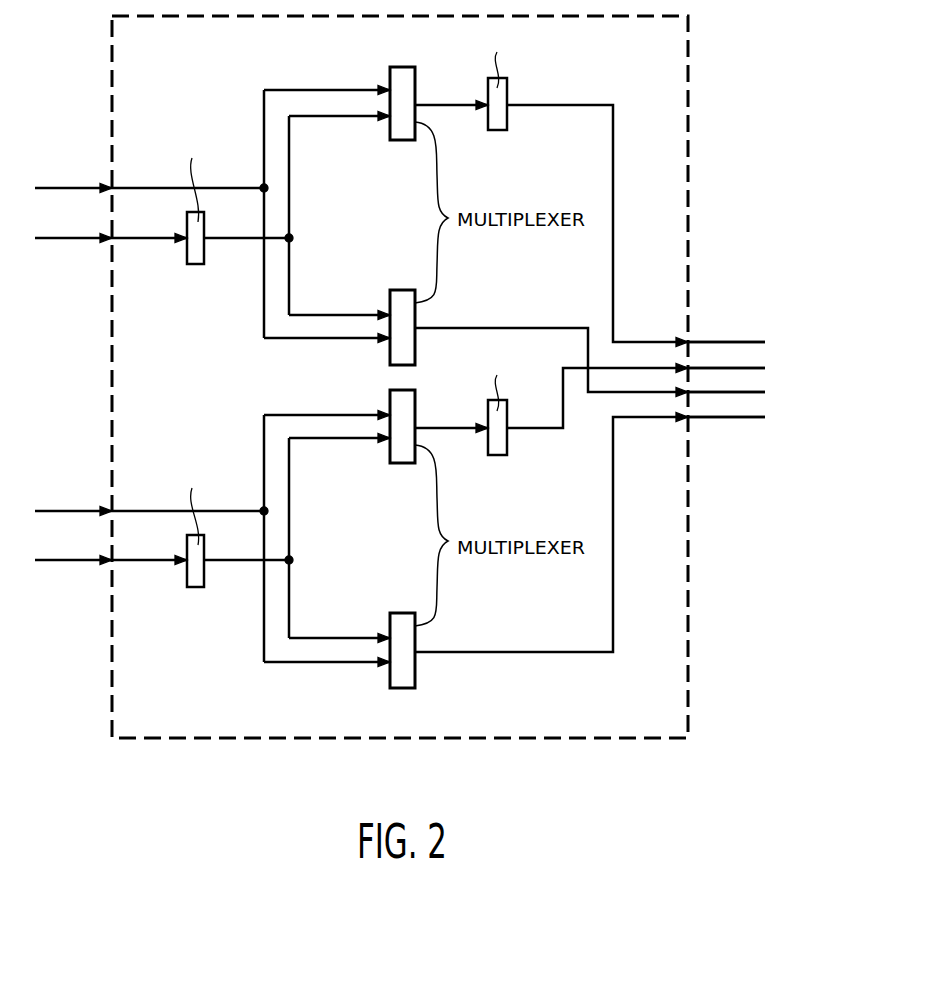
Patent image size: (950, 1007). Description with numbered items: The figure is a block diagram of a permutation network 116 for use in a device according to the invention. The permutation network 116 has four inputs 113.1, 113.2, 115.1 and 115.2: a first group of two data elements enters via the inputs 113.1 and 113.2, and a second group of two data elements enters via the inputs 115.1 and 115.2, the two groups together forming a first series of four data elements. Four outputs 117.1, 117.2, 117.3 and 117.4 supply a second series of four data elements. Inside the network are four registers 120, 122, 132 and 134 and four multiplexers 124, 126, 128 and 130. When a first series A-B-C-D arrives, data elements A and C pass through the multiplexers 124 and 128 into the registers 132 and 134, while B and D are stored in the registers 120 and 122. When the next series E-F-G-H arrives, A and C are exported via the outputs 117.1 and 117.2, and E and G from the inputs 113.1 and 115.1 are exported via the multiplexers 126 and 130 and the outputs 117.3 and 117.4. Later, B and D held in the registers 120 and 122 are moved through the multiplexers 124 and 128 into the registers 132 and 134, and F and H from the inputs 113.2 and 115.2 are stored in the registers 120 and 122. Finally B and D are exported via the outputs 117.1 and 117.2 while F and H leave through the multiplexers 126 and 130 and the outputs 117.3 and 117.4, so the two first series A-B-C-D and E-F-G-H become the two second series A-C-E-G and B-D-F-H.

The input 113.1 is at (52, 186).
The input 113.2 is at (52, 240).
The input 115.1 is at (52, 509).
The input 115.2 is at (50, 562).
The permutation network 116 is at (661, 734).
The output 117.1 is at (752, 341).
The output 117.2 is at (722, 367).
The output 117.3 is at (722, 394).
The output 117.4 is at (752, 419).
The register 120 is at (197, 266).
The register 122 is at (197, 589).
The multiplexer 124 is at (400, 135).
The multiplexer 126 is at (403, 298).
The multiplexer 128 is at (400, 458).
The multiplexer 130 is at (403, 620).
The register 132 is at (498, 128).
The register 134 is at (498, 455).